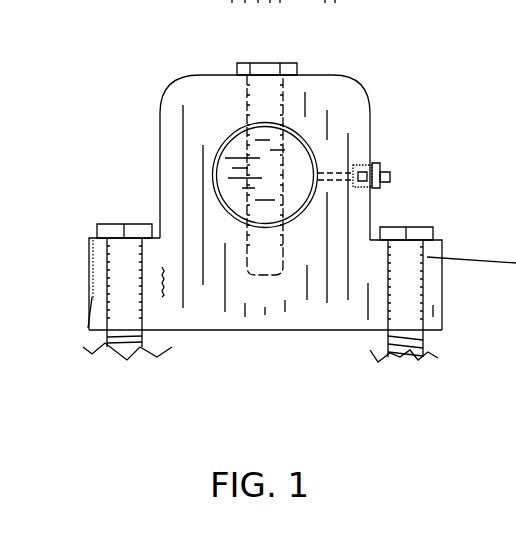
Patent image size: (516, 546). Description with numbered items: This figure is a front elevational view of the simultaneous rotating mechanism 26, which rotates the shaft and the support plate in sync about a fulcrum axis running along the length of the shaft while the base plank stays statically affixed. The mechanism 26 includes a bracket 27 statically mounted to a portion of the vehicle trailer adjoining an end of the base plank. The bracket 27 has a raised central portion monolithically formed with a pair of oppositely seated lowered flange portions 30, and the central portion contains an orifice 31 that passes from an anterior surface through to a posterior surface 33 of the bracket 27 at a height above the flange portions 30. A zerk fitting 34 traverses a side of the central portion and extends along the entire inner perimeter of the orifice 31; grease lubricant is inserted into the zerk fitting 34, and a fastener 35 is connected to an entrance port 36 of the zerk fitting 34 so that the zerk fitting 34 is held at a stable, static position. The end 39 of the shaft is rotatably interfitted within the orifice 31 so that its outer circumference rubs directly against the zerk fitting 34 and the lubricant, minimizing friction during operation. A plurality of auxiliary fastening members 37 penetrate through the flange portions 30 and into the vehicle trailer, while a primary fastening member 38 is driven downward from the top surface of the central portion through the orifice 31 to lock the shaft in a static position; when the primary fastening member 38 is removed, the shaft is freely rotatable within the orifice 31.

The simultaneous rotating mechanism 26 is at (353, 82).
The bracket 27 is at (228, 331).
The lowered flange portions 30 is at (88, 330).
The orifice 31 is at (222, 138).
The posterior surface 33 is at (427, 233).
The zerk fitting 34 is at (390, 172).
The fastener 35 is at (471, 205).
The entrance port 36 is at (380, 182).
The auxiliary fastening members 37 is at (103, 222).
The primary fastening member 38 is at (233, 62).
The end of the shaft 39 is at (312, 163).